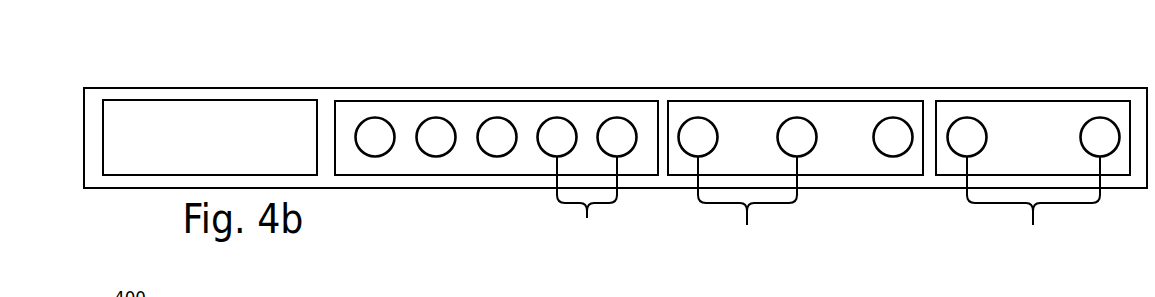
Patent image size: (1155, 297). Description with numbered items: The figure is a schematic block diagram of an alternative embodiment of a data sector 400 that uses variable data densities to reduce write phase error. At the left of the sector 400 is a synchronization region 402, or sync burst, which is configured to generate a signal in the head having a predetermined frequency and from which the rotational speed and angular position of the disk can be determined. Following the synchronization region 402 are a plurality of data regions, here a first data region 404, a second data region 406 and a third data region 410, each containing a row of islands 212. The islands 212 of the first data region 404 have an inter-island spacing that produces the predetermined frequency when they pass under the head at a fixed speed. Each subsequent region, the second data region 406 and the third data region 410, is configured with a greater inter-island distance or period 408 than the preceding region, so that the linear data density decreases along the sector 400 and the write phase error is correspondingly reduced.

The data sector 400 is at (161, 47).
The synchronization region 402 is at (193, 147).
The first data region 404 is at (440, 176).
The second data region 406 is at (838, 176).
The spacing 408 is at (828, 221).
The third data region 410 is at (951, 176).
The islands 212 is at (380, 117).